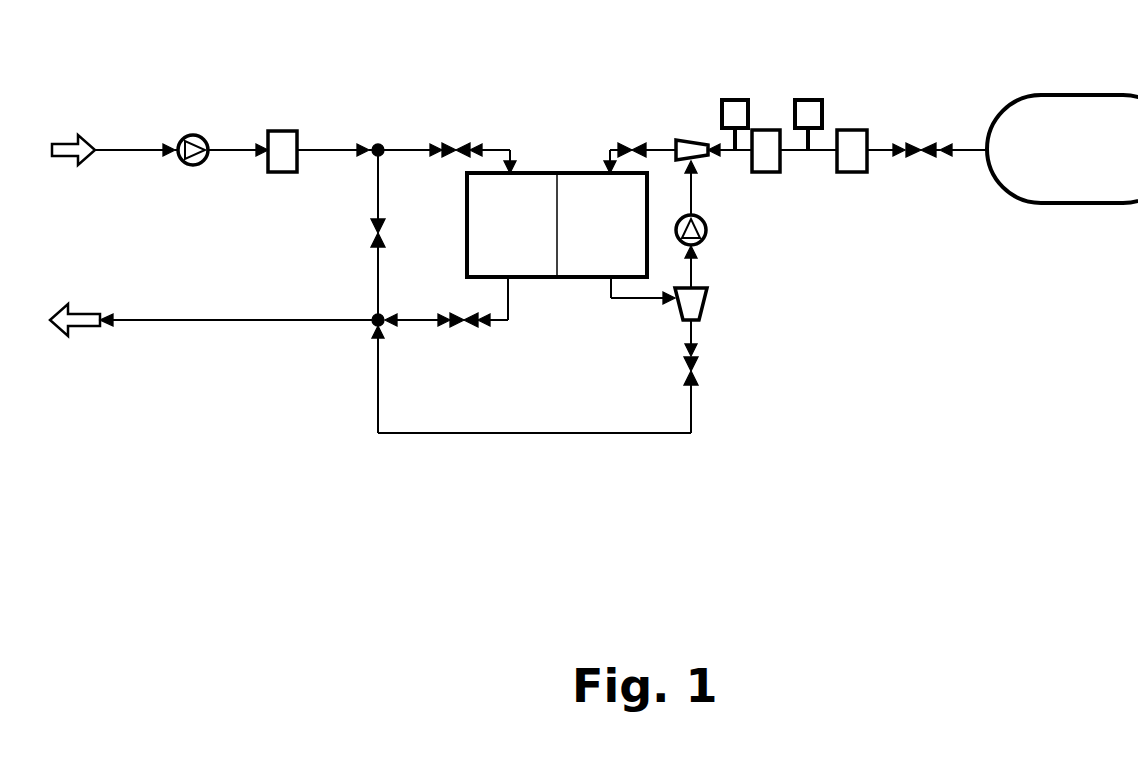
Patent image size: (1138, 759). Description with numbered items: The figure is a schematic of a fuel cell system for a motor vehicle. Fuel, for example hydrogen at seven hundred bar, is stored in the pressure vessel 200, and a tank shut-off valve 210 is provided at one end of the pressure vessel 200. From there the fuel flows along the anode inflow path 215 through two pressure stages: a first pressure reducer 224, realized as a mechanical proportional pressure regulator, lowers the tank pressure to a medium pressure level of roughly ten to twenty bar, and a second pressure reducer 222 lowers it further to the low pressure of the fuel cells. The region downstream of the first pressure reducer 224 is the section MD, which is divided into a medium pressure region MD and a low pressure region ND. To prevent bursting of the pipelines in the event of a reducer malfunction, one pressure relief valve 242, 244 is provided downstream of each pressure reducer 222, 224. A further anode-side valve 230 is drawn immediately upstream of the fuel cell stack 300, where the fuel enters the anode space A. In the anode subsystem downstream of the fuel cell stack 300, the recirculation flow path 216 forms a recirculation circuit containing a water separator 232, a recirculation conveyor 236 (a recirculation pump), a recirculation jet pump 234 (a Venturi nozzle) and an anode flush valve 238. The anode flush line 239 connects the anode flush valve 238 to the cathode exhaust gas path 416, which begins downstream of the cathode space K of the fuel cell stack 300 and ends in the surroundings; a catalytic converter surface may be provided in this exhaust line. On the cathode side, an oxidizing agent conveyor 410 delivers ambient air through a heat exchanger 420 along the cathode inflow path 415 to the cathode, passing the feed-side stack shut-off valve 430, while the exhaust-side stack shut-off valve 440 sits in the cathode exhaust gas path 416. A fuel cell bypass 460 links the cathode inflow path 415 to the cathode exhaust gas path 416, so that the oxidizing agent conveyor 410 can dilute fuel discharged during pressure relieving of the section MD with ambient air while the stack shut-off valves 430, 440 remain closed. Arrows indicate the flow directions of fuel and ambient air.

The pressure vessel 200 is at (1062, 149).
The tank shut-off valve 210 is at (918, 143).
The anode inflow path 215 is at (816, 175).
The recirculation flow path 216 is at (618, 300).
The second pressure reducer 222 is at (762, 129).
The first pressure reducer 224 is at (865, 129).
The valve 230 is at (633, 143).
The water separator 232 is at (707, 304).
The recirculation jet pump 234 is at (690, 139).
The recirculation conveyor 236 is at (710, 228).
The anode flush valve 238 is at (702, 375).
The anode flush line 239 is at (558, 435).
The pressure relief valve 242 is at (736, 100).
The pressure relief valve 244 is at (809, 100).
The fuel cell stack 300 is at (562, 171).
The oxidizing agent conveyor 410 is at (193, 134).
The cathode inflow path 415 is at (345, 148).
The cathode exhaust gas path 416 is at (256, 316).
The heat exchanger 420 is at (290, 130).
The feed line stack shut-off valve 430 is at (455, 148).
The exhaust gas stack shut-off valve 440 is at (458, 312).
The fuel cell bypass 460 is at (371, 231).
The low pressure section ND is at (662, 98).
The section MD is at (843, 92).